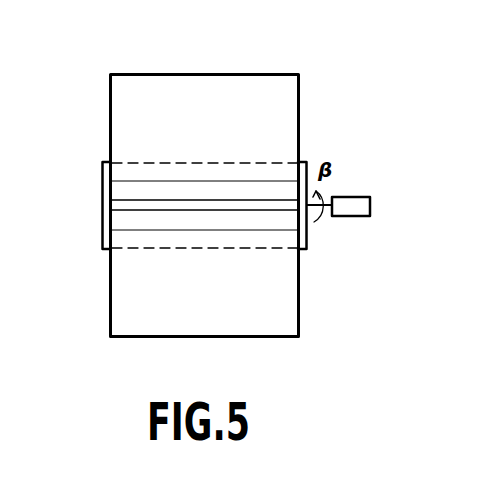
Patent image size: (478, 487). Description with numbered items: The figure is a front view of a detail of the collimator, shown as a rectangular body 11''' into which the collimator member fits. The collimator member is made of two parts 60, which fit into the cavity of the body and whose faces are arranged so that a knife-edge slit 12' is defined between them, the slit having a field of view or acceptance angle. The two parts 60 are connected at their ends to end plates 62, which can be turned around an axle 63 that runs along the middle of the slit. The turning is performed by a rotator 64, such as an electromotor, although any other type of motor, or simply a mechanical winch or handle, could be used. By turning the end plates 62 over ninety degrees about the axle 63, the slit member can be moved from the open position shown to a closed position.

The housing 11''' is at (205, 172).
The parts 60 is at (127, 168).
The end plates 62 is at (107, 194).
The knife-edge slit 12' is at (167, 207).
The axle 63 is at (312, 215).
The rotator 64 is at (360, 197).